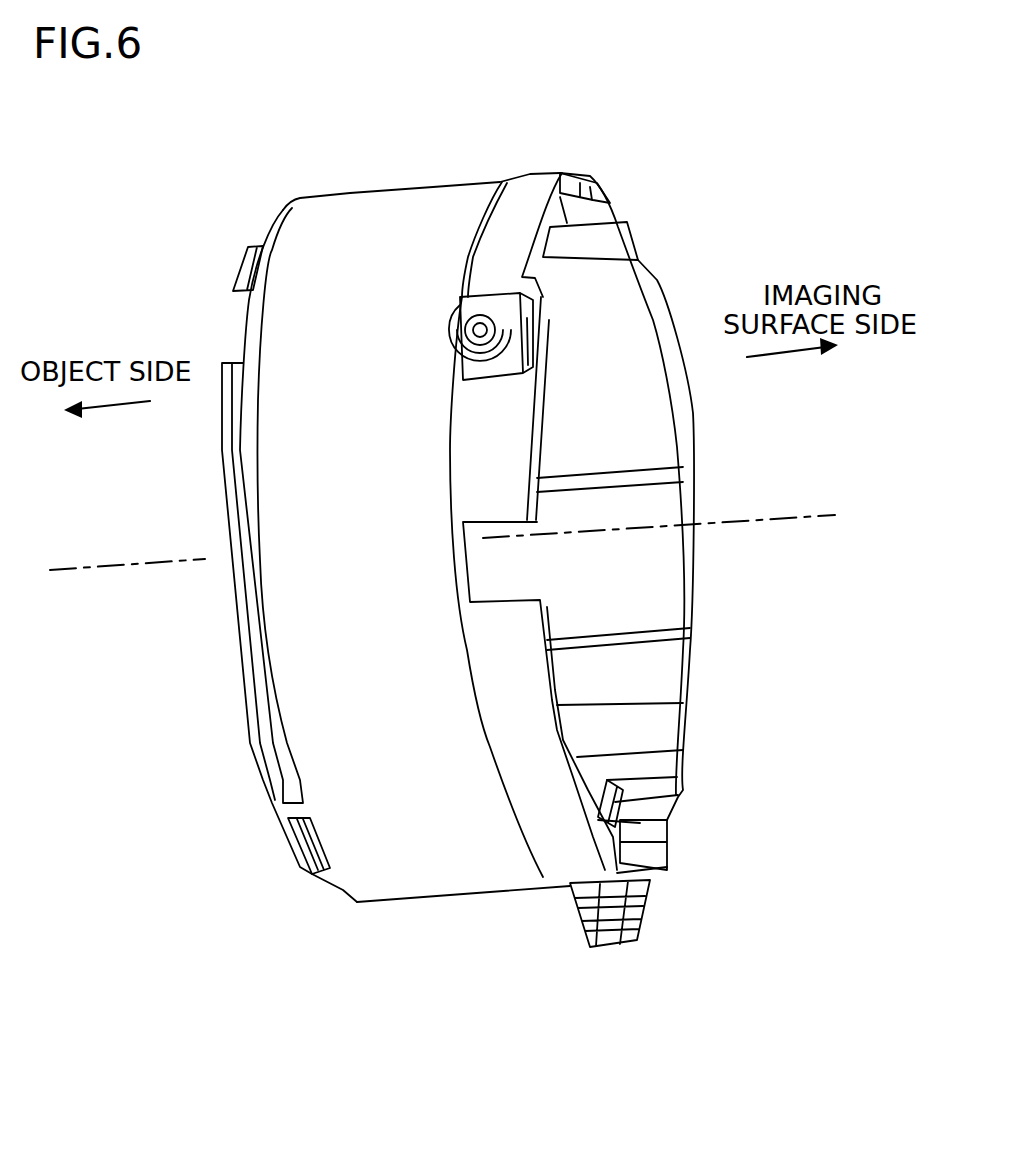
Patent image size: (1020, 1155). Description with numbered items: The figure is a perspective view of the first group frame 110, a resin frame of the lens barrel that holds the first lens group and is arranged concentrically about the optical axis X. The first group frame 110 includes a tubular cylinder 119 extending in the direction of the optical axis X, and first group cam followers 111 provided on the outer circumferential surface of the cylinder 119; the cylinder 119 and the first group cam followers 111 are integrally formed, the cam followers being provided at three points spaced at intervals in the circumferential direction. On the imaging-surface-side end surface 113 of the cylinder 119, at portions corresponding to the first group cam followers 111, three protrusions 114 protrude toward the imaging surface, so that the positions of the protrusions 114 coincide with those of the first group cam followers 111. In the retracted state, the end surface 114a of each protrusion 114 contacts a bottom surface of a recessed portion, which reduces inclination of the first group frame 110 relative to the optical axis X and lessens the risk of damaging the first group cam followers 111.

The first group frame 110 is at (330, 222).
The first group cam followers 111 is at (488, 310).
The imaging-surface-side end surface 113 is at (583, 185).
The protrusions 114 is at (560, 283).
The end surface of the protrusion 114a is at (543, 388).
The cylinder 119 is at (382, 874).
The optical axis X is at (92, 565).